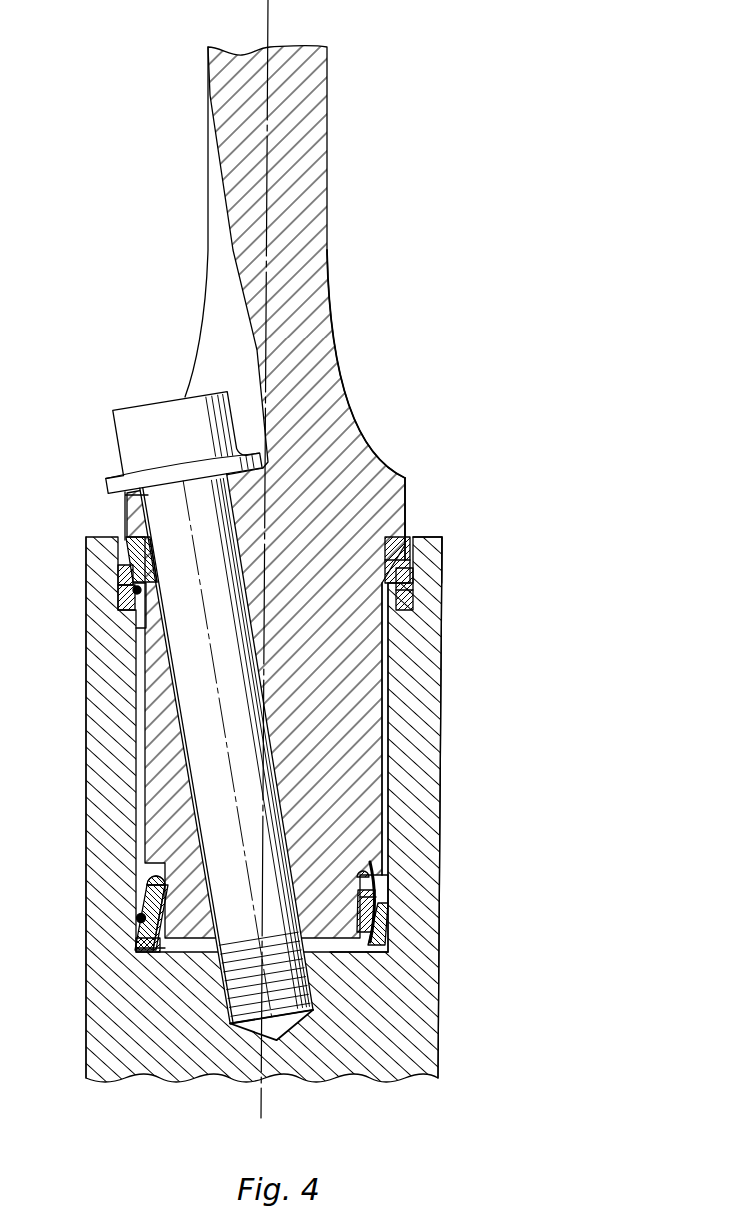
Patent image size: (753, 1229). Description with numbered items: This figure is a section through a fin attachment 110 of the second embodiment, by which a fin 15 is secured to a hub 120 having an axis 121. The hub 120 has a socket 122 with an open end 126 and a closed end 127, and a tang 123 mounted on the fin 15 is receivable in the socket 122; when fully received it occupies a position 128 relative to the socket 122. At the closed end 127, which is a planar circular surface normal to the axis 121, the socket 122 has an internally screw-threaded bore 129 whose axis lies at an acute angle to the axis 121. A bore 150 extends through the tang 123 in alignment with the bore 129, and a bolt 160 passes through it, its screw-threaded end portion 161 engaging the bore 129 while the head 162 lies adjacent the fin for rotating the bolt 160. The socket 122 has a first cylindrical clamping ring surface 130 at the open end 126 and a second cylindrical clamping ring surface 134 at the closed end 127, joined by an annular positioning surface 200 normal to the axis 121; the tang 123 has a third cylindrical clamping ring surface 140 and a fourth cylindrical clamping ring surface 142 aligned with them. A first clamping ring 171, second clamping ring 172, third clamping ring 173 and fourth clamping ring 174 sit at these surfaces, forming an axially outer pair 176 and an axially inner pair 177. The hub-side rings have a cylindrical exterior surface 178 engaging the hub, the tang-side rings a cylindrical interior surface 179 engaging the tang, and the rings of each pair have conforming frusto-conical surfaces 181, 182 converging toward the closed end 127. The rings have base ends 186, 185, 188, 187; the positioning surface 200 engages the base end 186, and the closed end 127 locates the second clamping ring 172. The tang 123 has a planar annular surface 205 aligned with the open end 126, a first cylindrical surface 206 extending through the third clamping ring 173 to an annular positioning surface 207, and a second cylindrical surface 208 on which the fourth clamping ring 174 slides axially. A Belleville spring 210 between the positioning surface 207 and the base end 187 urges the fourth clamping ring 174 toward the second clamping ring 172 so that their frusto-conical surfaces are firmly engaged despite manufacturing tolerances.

The fin 15 is at (328, 93).
The fin attachment 110 is at (381, 433).
The axis 121 is at (269, 9).
The hub 120 is at (336, 1082).
The socket 122 is at (180, 942).
The tang 123 is at (386, 720).
The open end 126 is at (415, 538).
The closed end 127 is at (352, 955).
The position 128 is at (345, 666).
The internally screw-threaded bore 129 is at (310, 1012).
The first cylindrical clamping ring surface 130 is at (118, 573).
The second cylindrical clamping ring surface 134 is at (145, 903).
The third cylindrical clamping ring surface 140 is at (392, 565).
The fourth cylindrical clamping ring surface 142 is at (360, 897).
The bore 150 is at (176, 715).
The bolt 160 is at (126, 402).
The screw-threaded end portion 161 is at (232, 1012).
The head surface 162 is at (118, 441).
The first clamping ring 171 is at (414, 580).
The second clamping ring 172 is at (390, 937).
The third clamping ring 173 is at (410, 556).
The fourth clamping ring 174 is at (386, 901).
The axially outer pair 176 is at (416, 601).
The axially inner pair 177 is at (373, 958).
The cylindrical exterior surface 178 is at (118, 603).
The cylindrical interior surface 179 is at (150, 568).
The frusto-conical surface 181 is at (118, 590).
The frusto-conical surface 182 is at (126, 553).
The base end 185 is at (133, 533).
The base end 186 is at (147, 627).
The base end 187 is at (160, 882).
The base end 188 is at (136, 948).
The annular positioning surface 200 is at (108, 632).
The planar annular surface 205 is at (392, 545).
The first cylindrical surface 206 is at (441, 796).
The annular positioning surface 207 is at (369, 868).
The second cylindrical surface 208 is at (360, 880).
The Belleville spring 210 is at (398, 890).